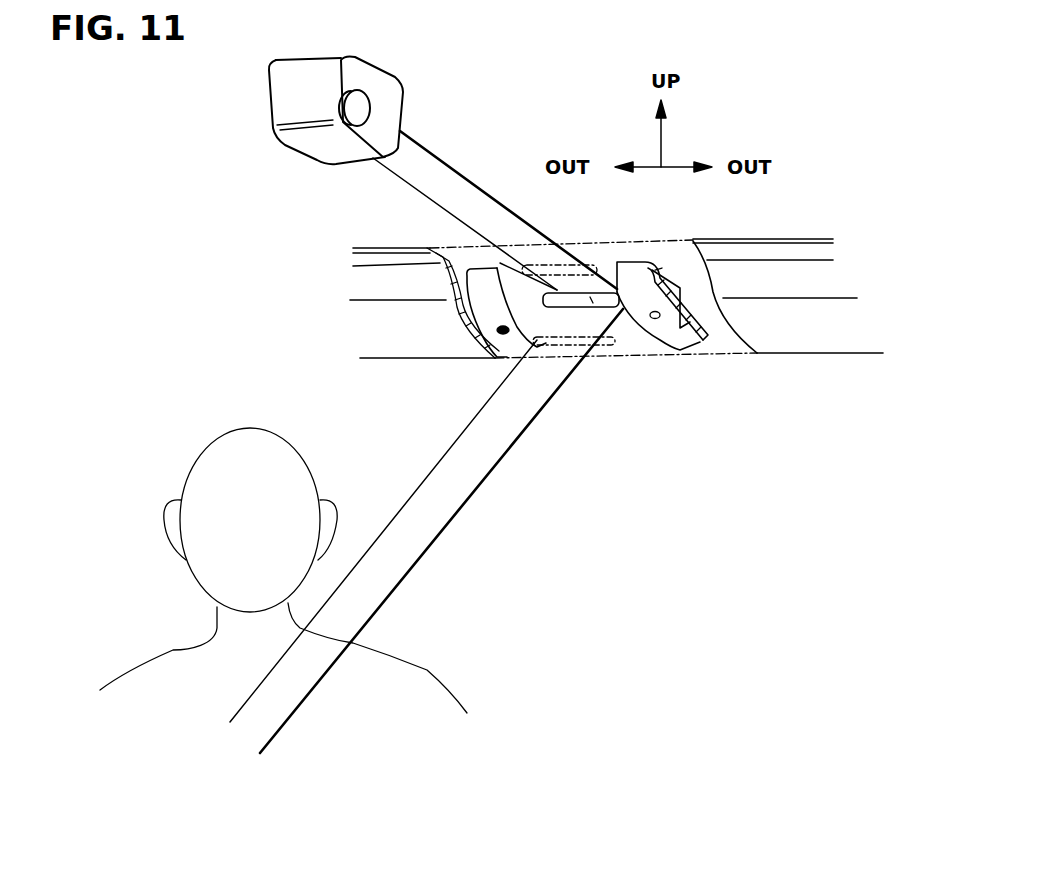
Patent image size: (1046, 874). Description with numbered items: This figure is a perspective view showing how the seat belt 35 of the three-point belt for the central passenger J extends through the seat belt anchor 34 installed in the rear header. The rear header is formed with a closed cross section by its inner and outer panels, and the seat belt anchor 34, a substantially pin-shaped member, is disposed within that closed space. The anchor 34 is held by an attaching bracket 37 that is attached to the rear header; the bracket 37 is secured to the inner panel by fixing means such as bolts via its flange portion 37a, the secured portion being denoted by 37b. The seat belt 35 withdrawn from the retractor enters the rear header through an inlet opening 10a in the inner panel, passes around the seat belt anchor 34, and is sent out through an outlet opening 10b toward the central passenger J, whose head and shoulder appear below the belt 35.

The seat belt 35 is at (428, 167).
The inlet opening 10a is at (543, 263).
The outlet opening 10b is at (573, 342).
The attaching bracket 37 is at (662, 285).
The flange portion 37a is at (487, 312).
The secured portion 37b is at (503, 337).
The seat belt anchor 34 is at (623, 308).
The central passenger J is at (420, 670).